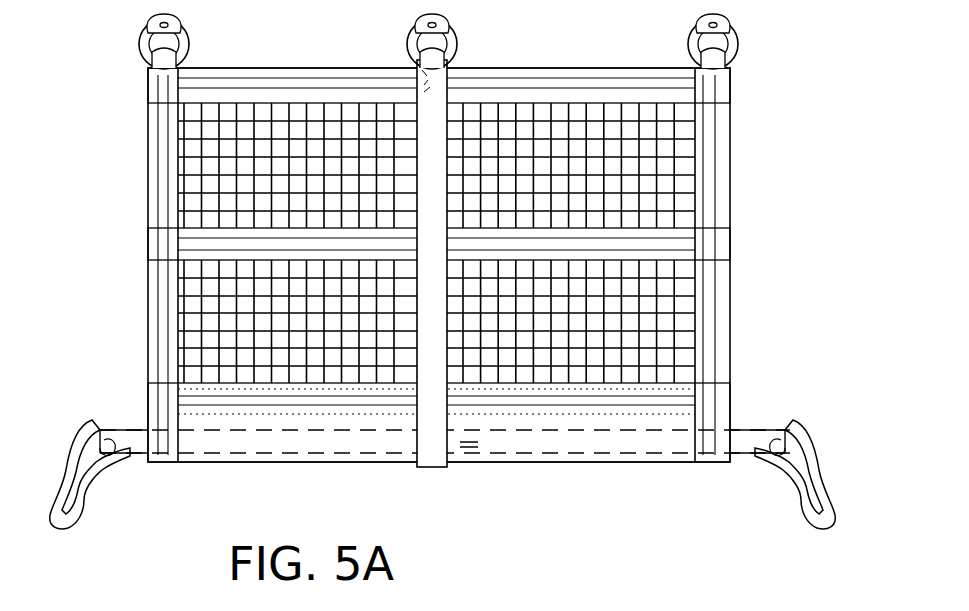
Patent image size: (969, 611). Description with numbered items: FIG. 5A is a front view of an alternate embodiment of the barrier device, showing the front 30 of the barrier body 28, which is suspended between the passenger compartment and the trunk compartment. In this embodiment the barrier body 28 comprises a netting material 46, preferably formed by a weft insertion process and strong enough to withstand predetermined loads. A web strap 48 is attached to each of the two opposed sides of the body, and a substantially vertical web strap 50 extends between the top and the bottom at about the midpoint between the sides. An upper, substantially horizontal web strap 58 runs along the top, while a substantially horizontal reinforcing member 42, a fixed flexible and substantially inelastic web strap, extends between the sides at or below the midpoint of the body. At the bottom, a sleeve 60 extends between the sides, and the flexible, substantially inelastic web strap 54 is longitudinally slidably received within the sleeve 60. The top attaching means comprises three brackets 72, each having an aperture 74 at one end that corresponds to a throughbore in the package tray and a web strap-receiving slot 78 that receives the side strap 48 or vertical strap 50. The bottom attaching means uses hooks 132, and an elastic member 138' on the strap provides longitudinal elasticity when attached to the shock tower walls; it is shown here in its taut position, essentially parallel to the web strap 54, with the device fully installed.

The barrier body 28 is at (650, 189).
The front 30 is at (665, 312).
The reinforcing member 42 is at (733, 247).
The netting material 46 is at (250, 310).
The web strap 48 is at (150, 190).
The vertical web strap 50 is at (430, 128).
The web strap 54 is at (778, 428).
The upper web strap 58 is at (568, 90).
The sleeve 60 is at (547, 453).
The bracket 72 is at (745, 42).
The aperture 74 is at (732, 24).
The web strap-receiving slot 78 is at (415, 42).
The hook 132 is at (82, 490).
The elastic member 138' is at (501, 492).